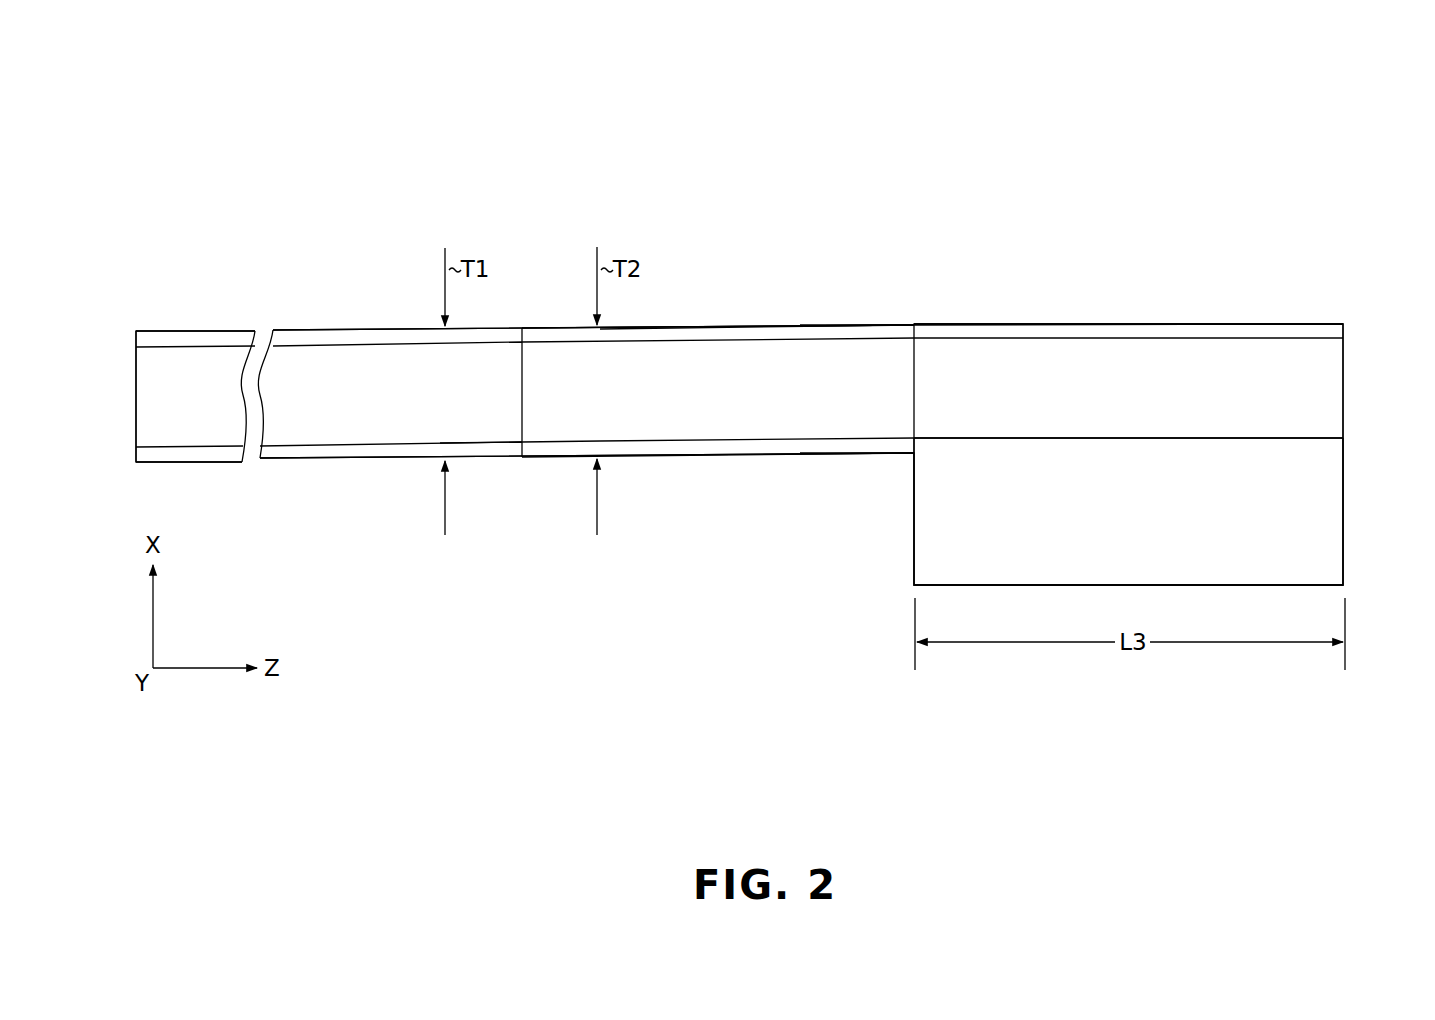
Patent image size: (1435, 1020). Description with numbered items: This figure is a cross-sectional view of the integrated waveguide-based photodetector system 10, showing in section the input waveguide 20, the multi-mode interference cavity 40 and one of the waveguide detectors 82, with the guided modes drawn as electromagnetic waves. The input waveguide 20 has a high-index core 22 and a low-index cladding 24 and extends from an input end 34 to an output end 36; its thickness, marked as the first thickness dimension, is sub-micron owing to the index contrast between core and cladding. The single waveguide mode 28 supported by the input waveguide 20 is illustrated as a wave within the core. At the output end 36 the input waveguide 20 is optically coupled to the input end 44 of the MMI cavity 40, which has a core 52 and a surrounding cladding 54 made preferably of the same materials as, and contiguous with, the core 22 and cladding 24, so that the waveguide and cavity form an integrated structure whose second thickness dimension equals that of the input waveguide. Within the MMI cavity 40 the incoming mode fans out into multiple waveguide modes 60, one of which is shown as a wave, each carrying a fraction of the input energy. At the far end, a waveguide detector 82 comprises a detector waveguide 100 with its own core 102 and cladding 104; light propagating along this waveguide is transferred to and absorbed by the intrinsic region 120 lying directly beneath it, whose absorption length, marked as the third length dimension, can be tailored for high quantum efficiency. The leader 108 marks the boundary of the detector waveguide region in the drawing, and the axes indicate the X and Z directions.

The integrated waveguide-based photodetector system 10 is at (1272, 162).
The input waveguide 20 is at (397, 470).
The core 22 is at (208, 425).
The cladding 24 is at (205, 331).
The single waveguide mode 28 is at (312, 285).
The input end 34 is at (136, 397).
The output end 36 is at (508, 427).
The multi-mode interference (MMI) cavity 40 is at (689, 472).
The input end 44 is at (538, 427).
The core 52 is at (652, 355).
The cladding 54 is at (742, 328).
The multiple waveguide modes 60 is at (790, 285).
The waveguide detector 82 is at (1360, 363).
The waveguide 100 is at (1082, 302).
The core 102 is at (1150, 352).
The cladding 104 is at (1267, 325).
The dividing wall 108 is at (1035, 280).
The intrinsic region 120 is at (1325, 538).